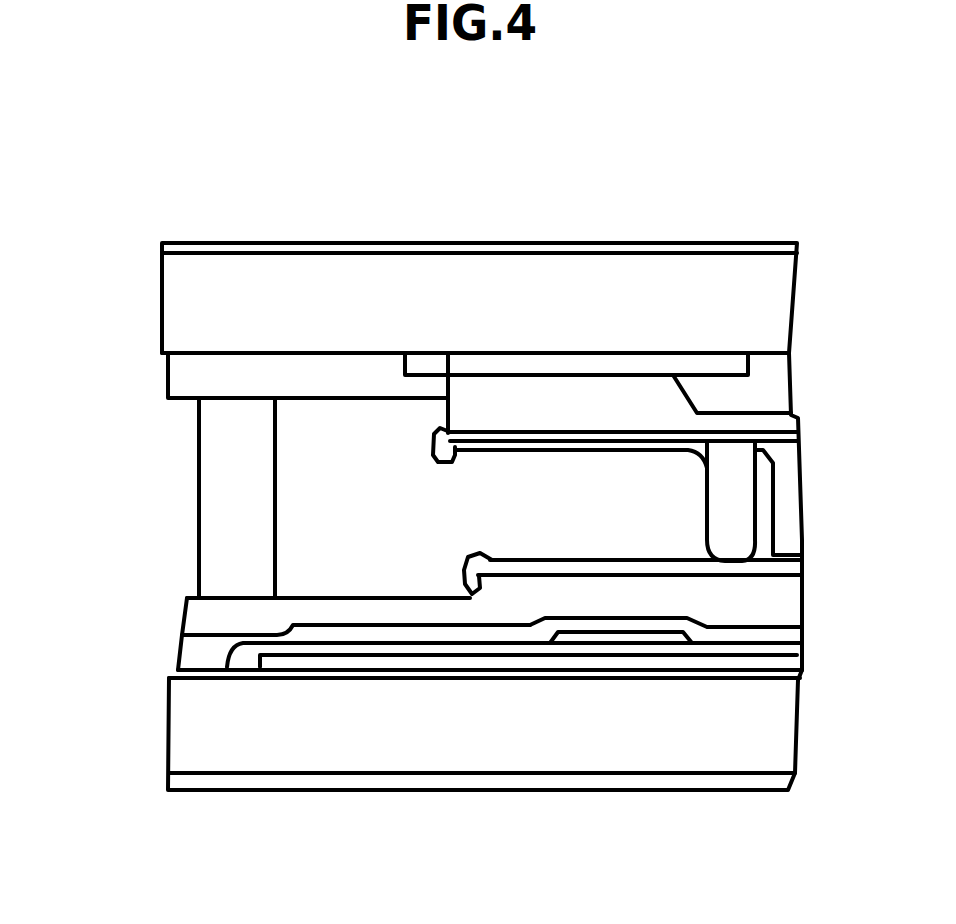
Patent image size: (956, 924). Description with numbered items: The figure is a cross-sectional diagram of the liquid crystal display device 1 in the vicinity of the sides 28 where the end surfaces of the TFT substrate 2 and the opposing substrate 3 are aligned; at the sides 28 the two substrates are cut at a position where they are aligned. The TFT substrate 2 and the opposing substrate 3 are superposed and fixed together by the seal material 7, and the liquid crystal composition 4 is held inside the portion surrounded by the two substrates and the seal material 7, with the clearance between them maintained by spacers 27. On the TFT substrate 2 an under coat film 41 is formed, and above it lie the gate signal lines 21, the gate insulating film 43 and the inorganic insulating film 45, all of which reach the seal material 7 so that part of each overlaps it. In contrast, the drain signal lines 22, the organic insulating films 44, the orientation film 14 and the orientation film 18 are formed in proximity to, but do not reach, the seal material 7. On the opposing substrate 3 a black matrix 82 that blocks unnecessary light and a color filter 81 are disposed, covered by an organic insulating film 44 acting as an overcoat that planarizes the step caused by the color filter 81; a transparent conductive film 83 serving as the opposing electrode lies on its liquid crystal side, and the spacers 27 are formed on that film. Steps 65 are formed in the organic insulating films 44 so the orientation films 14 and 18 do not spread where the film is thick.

The liquid crystal display device 1 is at (500, 225).
The TFT substrate 2 is at (208, 750).
The opposing substrate 3 is at (188, 297).
The liquid crystal composition 4 is at (327, 555).
The seal material 7 is at (246, 430).
The orientation film 14 is at (453, 452).
The orientation film 18 is at (488, 572).
The gate signal lines 21 is at (443, 660).
The drain signal lines 22 is at (610, 640).
The spacers 27 is at (728, 508).
The sides 28 is at (184, 225).
The under coat film 41 is at (353, 670).
The gate insulating film 43 is at (525, 650).
The organic insulating film 44 is at (352, 373).
The inorganic insulating film 45 is at (705, 633).
The step 65 is at (448, 353).
The color filter 81 is at (743, 400).
The black matrix 82 is at (632, 360).
The transparent conductive film 83 is at (555, 432).